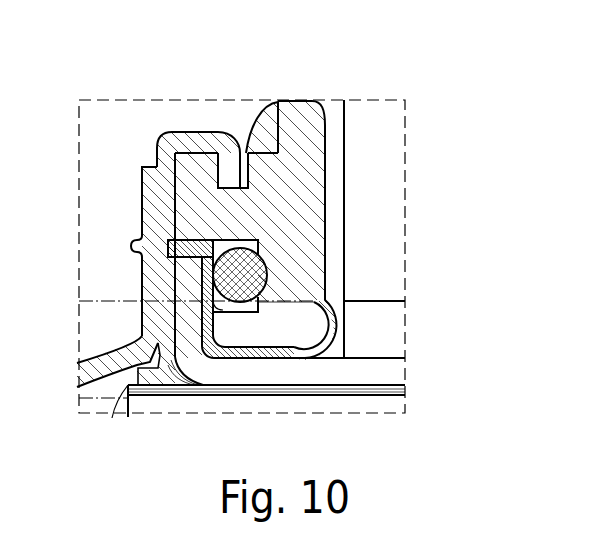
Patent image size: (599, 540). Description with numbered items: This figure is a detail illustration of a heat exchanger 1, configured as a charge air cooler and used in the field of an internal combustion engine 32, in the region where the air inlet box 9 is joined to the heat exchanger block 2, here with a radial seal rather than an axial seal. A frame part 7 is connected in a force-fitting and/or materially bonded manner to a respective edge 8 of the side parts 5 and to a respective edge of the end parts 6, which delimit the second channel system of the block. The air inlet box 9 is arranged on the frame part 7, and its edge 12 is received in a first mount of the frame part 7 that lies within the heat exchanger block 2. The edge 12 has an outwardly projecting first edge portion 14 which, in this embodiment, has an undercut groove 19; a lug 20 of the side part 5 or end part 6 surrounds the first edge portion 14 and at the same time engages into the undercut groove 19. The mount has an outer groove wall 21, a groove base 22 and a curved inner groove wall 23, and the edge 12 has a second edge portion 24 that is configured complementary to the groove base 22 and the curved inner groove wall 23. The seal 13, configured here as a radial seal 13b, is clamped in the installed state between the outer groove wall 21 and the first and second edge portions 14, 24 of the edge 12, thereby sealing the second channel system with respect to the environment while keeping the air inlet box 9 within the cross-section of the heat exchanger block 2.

The heat exchanger 1 is at (0, 51).
The heat exchanger block 2 is at (439, 539).
The internal combustion engine 32 is at (232, 27).
The side part 5 is at (88, 358).
The end part 6 is at (352, 371).
The frame part 7 is at (334, 337).
The edge 8 is at (157, 181).
The air inlet box 9 is at (313, 96).
The edge of the air inlet box 12 is at (292, 168).
The seal 13 is at (369, 227).
The radial seal 13b is at (242, 278).
The first edge portion 14 is at (195, 209).
The undercut groove 19 is at (240, 153).
The lug 20 is at (222, 130).
The outer groove wall 21 is at (201, 310).
The groove base 22 is at (254, 337).
The curved inner groove wall 23 is at (315, 304).
The second edge portion 24 is at (289, 314).